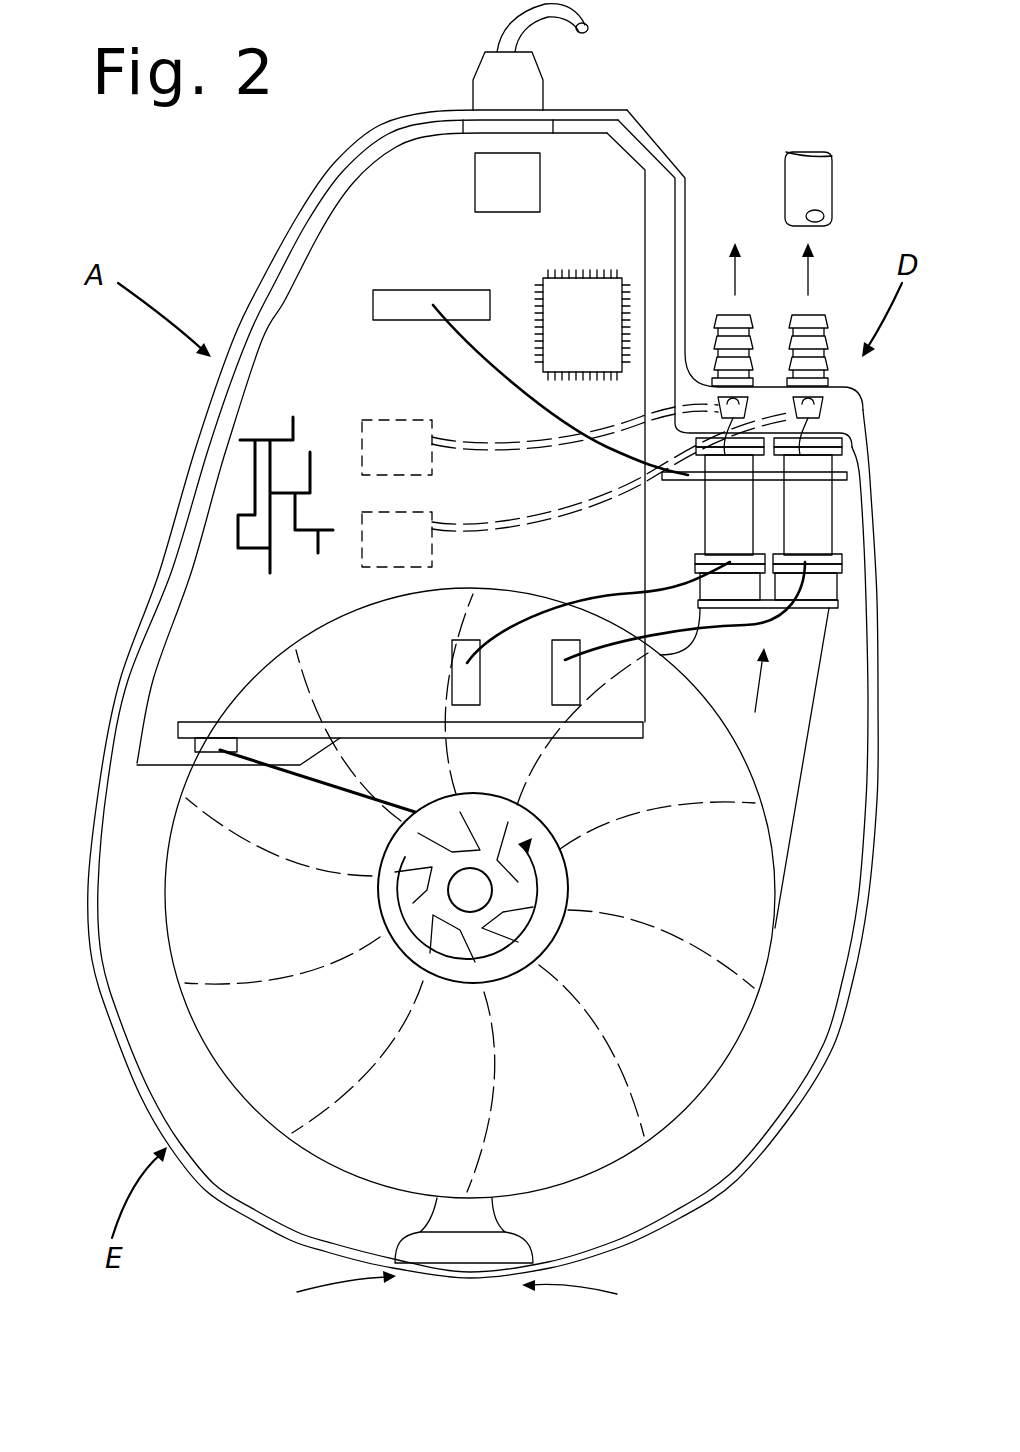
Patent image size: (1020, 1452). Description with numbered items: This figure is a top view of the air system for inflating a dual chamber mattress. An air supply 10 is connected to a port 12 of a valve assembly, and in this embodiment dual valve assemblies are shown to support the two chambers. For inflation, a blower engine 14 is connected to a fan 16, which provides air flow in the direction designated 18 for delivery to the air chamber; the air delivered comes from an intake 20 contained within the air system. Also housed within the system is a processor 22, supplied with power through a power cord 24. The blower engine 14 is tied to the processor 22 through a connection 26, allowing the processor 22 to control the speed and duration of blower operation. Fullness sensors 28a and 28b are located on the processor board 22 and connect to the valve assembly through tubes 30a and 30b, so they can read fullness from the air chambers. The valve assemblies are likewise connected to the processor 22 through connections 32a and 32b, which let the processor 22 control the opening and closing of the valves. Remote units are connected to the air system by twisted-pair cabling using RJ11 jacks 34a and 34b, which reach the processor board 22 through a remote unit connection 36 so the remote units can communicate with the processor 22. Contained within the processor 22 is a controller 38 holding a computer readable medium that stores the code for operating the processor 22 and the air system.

The air supply 10 is at (797, 185).
The port 12 is at (822, 318).
The blower engine 14 is at (518, 825).
The fan 16 is at (758, 919).
The air flow direction 18 is at (735, 280).
The intake 20 is at (495, 1247).
The processor 22 is at (330, 250).
The power cord 24 is at (510, 30).
The connection 26 is at (203, 743).
The fullness sensor 28a is at (375, 430).
The fullness sensor 28b is at (380, 535).
The tube 30a is at (465, 447).
The tube 30b is at (450, 527).
The connection 32a is at (465, 680).
The connection 32b is at (565, 683).
The RJ11 jack 34a is at (718, 405).
The RJ11 jack 34b is at (817, 407).
The remote unit connection 36 is at (395, 300).
The controller 38 is at (570, 302).